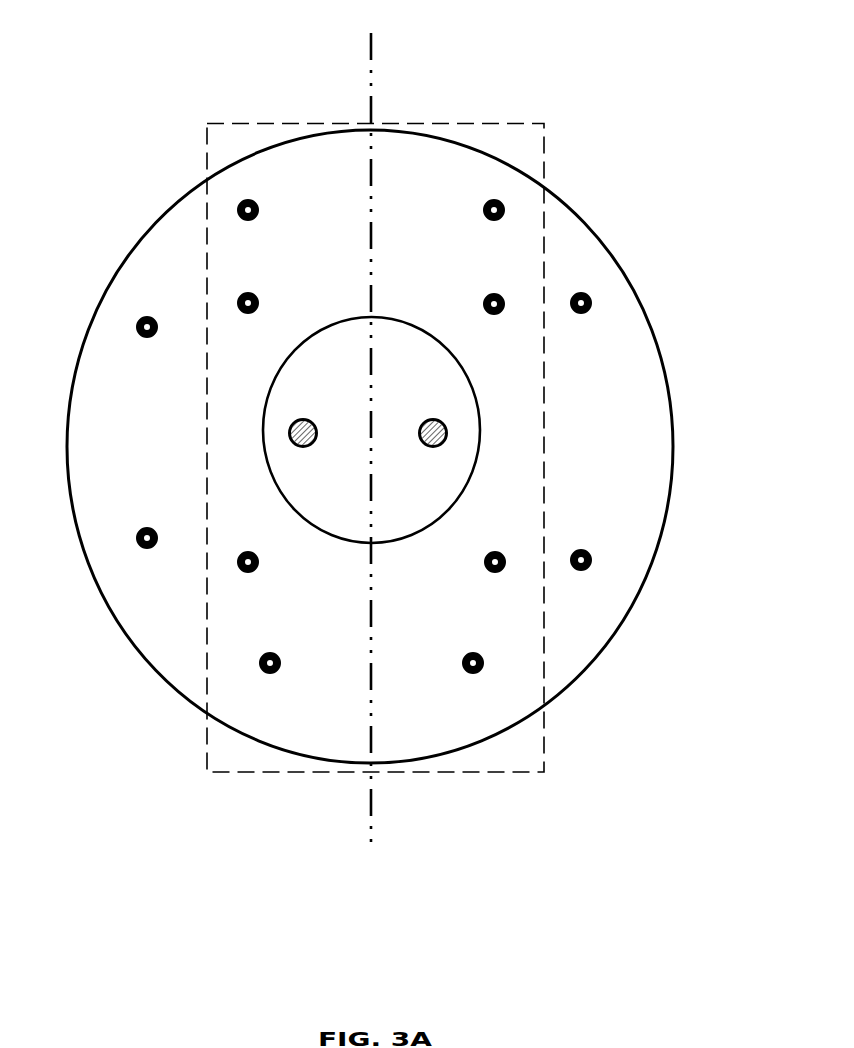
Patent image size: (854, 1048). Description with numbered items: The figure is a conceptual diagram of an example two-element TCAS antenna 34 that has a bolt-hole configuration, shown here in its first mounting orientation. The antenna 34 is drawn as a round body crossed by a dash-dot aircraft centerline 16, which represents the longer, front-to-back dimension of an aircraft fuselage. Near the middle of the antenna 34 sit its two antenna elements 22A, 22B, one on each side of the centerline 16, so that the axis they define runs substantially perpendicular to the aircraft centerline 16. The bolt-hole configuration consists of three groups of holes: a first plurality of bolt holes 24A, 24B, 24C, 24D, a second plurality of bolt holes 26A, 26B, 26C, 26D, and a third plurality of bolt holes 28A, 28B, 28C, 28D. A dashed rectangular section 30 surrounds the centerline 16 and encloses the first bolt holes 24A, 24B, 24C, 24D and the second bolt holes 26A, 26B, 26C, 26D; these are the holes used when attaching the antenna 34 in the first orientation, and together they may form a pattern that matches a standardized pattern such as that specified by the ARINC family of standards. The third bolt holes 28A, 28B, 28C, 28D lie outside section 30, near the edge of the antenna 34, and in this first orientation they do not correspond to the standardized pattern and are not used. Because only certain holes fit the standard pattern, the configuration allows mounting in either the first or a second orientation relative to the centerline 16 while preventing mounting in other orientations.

The aircraft centerline 16 is at (371, 40).
The antenna element 22A is at (296, 421).
The antenna element 22B is at (441, 420).
The first bolt hole 24A is at (256, 200).
The first bolt hole 24B is at (488, 200).
The first bolt hole 24C is at (275, 650).
The first bolt hole 24D is at (468, 650).
The second bolt hole 26A is at (256, 296).
The second bolt hole 26B is at (489, 295).
The second bolt hole 26C is at (255, 574).
The second bolt hole 26D is at (490, 574).
The third bolt hole 28A is at (152, 338).
The third bolt hole 28B is at (581, 316).
The third bolt hole 28C is at (146, 527).
The third bolt hole 28D is at (585, 549).
The section 30 is at (545, 150).
The two-element TCAS antenna 34 is at (647, 312).